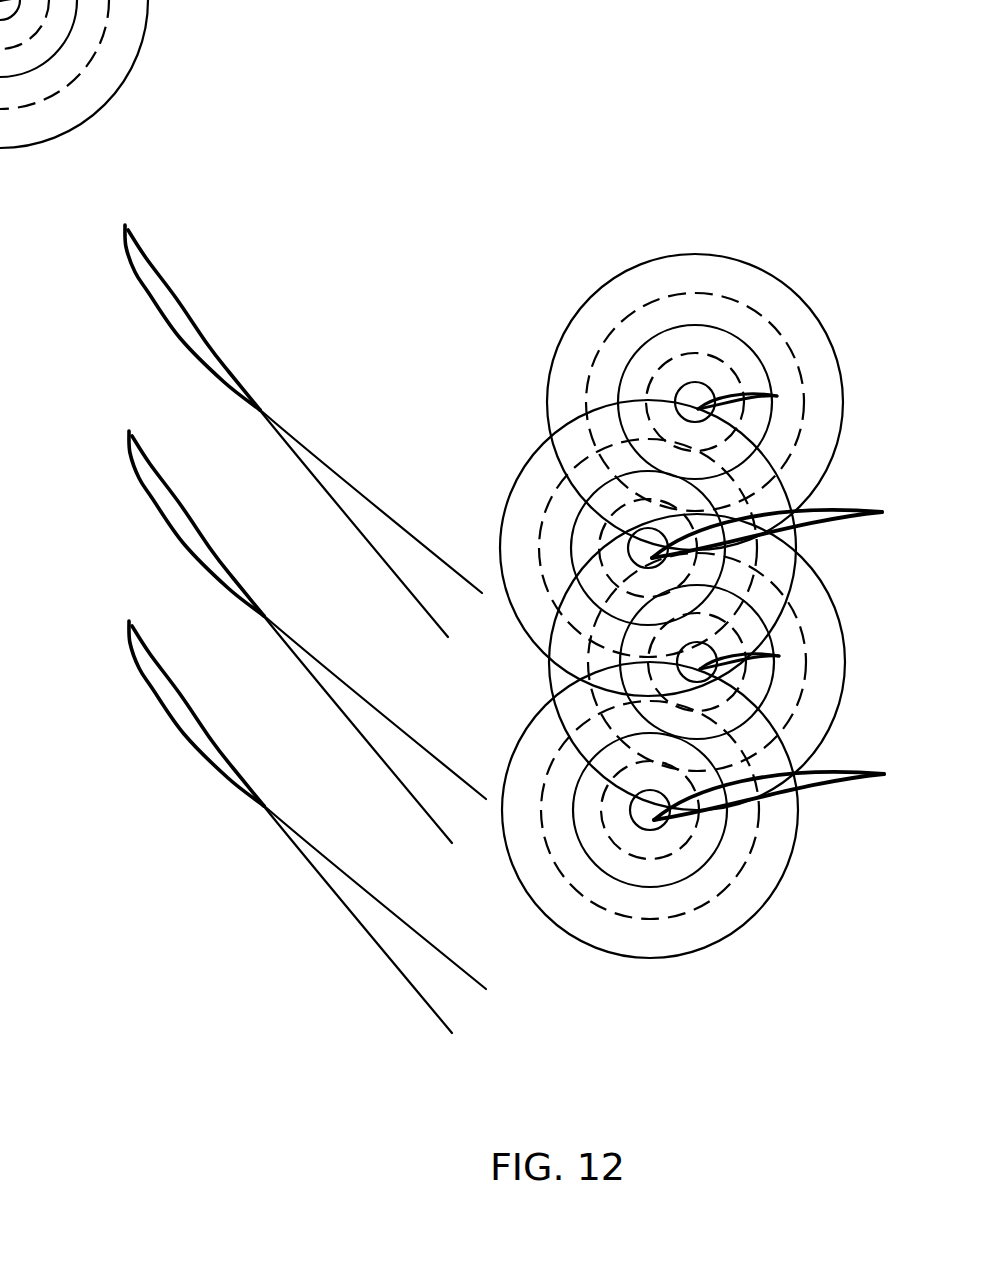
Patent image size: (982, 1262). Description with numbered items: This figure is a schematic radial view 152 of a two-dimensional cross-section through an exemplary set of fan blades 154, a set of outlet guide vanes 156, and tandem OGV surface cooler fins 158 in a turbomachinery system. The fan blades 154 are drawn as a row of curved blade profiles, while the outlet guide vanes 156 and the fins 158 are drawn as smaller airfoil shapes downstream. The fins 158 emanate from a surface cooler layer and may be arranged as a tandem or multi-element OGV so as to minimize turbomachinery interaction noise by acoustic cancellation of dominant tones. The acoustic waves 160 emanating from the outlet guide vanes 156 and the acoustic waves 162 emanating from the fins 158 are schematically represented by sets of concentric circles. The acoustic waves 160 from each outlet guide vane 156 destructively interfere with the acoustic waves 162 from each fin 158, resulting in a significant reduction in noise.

The radial view 152 is at (758, 55).
The fan blades 154 is at (148, 447).
The outlet guide vanes 156 is at (843, 508).
The fins 158 is at (760, 392).
The acoustic waves 160 is at (523, 472).
The acoustic waves 162 is at (807, 298).